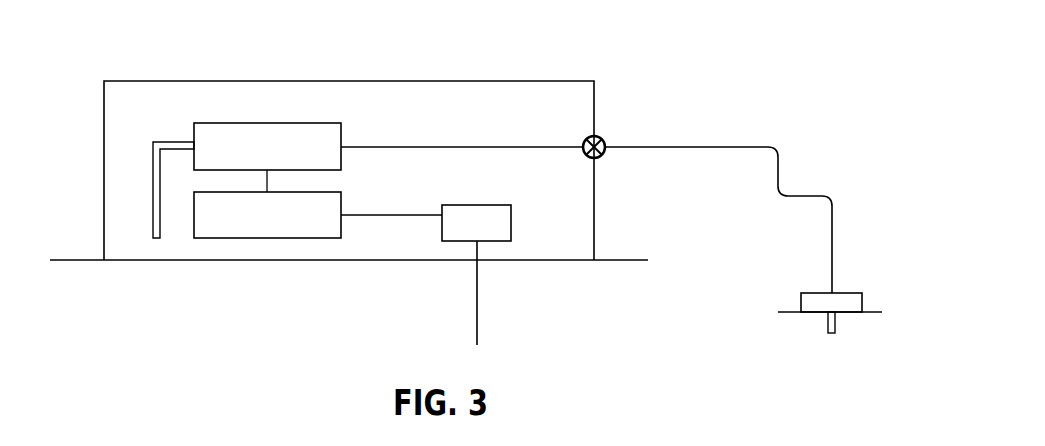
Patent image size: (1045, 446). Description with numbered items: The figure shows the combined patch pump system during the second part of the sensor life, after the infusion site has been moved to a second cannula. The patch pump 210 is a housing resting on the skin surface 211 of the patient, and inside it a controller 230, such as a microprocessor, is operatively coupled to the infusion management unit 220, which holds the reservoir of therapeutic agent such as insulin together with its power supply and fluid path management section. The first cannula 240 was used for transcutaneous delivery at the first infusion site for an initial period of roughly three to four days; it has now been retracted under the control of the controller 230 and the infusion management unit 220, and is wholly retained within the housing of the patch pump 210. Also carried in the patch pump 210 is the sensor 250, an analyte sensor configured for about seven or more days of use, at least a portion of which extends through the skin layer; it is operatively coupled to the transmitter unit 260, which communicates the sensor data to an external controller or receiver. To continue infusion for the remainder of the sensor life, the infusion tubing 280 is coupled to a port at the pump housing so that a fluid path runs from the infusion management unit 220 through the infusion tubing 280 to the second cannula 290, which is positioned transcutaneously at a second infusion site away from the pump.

The patch pump 210 is at (337, 80).
The mounting surface / base 211 is at (77, 258).
The infusion management unit 220 is at (241, 122).
The controller 230 is at (268, 239).
The first cannula 240 is at (153, 217).
The sensor 250 is at (478, 305).
The transmitter unit 260 is at (511, 222).
The infusion tubing 280 is at (703, 143).
The second cannula 290 is at (836, 322).